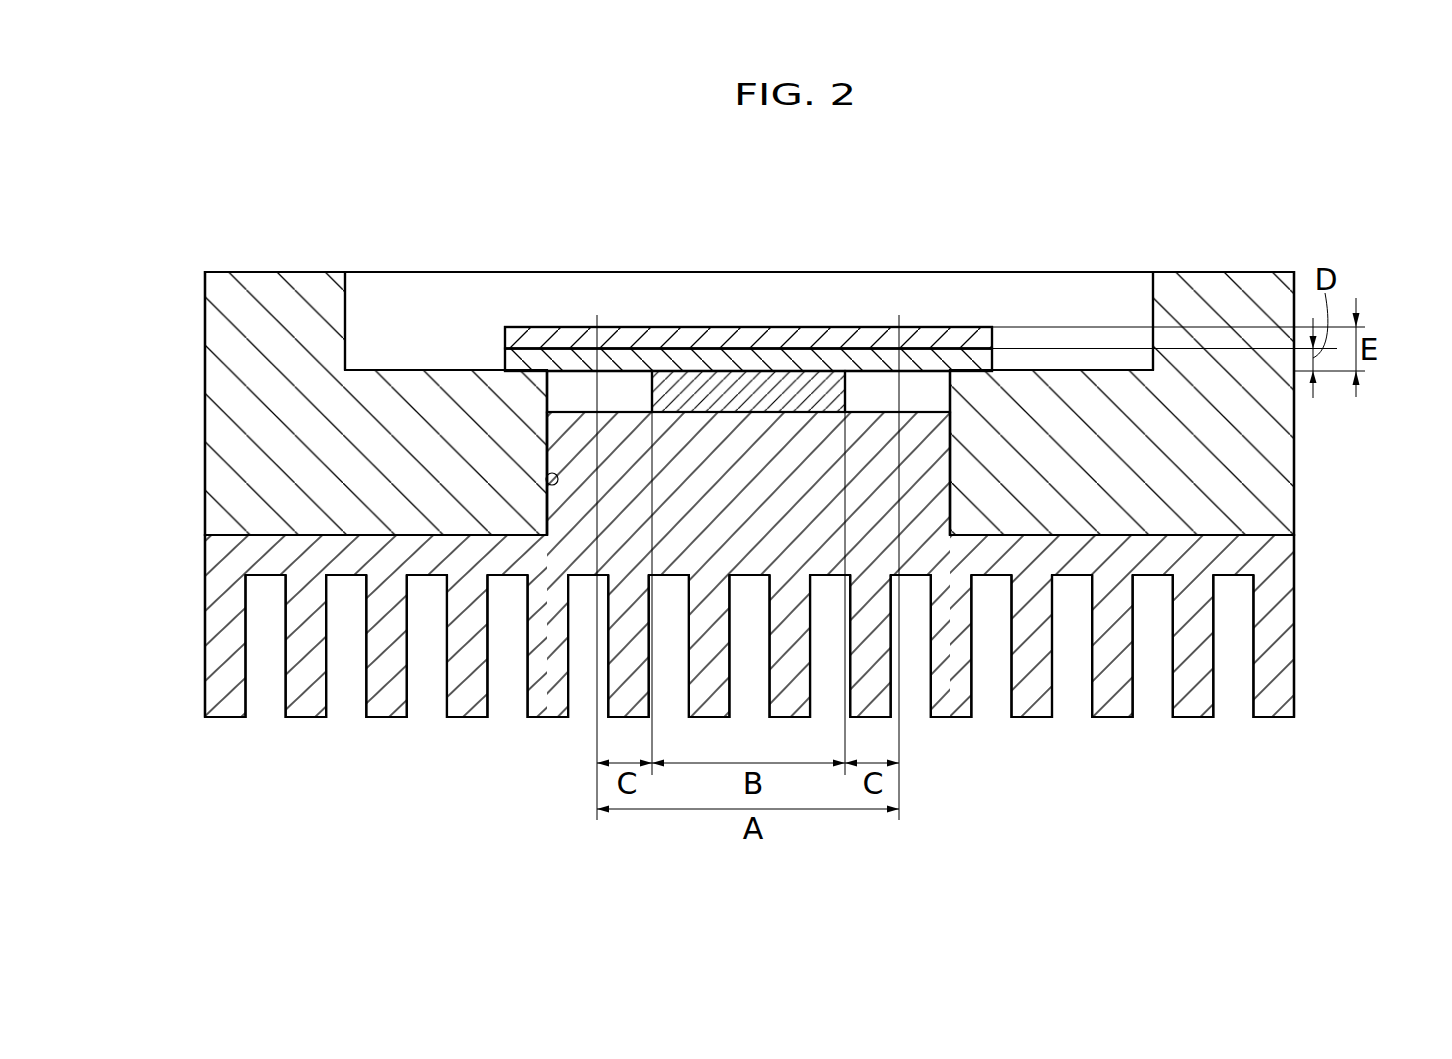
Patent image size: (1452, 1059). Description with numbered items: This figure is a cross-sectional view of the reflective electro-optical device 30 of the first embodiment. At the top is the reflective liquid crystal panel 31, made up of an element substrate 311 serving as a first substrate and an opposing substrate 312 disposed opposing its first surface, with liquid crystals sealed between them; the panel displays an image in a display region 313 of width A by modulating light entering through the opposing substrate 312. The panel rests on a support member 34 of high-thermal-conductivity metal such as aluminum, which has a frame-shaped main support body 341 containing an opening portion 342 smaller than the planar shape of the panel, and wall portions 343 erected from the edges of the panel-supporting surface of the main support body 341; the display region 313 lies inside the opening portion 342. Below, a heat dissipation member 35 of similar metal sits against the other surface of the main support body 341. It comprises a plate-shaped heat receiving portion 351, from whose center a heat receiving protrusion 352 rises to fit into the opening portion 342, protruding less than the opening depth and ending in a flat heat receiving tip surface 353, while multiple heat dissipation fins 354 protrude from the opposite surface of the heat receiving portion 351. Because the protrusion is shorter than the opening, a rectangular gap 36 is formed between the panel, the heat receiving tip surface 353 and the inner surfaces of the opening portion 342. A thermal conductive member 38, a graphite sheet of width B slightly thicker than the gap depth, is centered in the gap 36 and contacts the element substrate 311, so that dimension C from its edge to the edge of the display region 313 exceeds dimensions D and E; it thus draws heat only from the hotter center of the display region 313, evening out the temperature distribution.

The reflective electro-optical device 30 is at (1328, 176).
The reflective liquid crystal panel 31 is at (977, 222).
The element substrate 311 is at (972, 354).
The opposing substrate 312 is at (952, 333).
The display region 313 is at (895, 324).
The support member 34 is at (1370, 454).
The main support body 341 is at (218, 425).
The opening portion 342 is at (545, 487).
The wall portions 343 is at (218, 333).
The heat dissipation member 35 is at (1340, 606).
The heat receiving portion 351 is at (218, 563).
The heat receiving protrusion 352 is at (567, 522).
The heat receiving tip surface 353 is at (577, 410).
The heat dissipation fins 354 is at (1113, 706).
The gap 36 is at (622, 397).
The thermal conductive member 38 is at (845, 398).